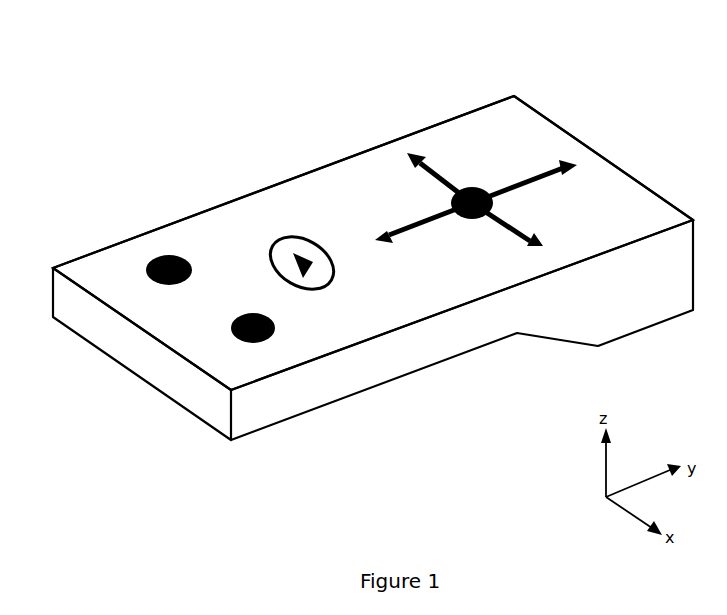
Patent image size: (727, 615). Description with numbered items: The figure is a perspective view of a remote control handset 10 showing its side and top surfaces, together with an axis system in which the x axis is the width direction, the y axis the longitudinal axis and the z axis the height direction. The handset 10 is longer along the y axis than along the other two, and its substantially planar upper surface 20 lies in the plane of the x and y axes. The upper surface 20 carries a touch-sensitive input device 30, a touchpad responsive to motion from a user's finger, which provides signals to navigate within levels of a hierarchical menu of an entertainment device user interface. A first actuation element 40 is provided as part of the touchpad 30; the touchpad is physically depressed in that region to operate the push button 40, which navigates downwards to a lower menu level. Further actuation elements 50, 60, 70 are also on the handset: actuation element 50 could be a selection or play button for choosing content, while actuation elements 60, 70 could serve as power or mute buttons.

The remote control handset 10 is at (333, 115).
The upper surface 20 is at (242, 220).
The touch-sensitive input device 30 is at (436, 193).
The first actuation element 40 is at (472, 188).
The actuation element 50 is at (318, 278).
The actuation element 60 is at (150, 285).
The actuation element 70 is at (240, 347).